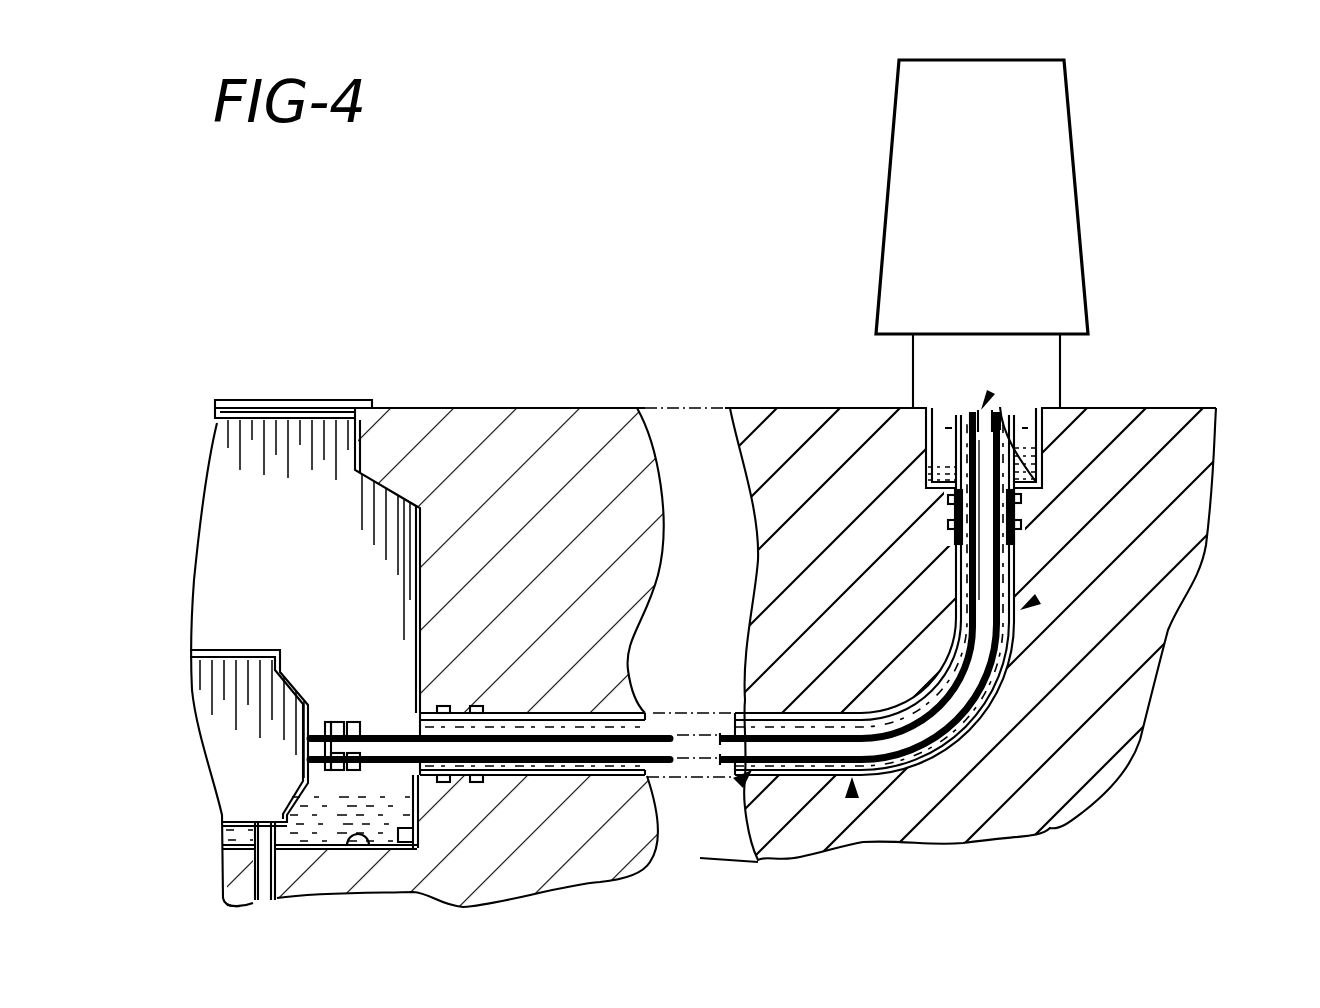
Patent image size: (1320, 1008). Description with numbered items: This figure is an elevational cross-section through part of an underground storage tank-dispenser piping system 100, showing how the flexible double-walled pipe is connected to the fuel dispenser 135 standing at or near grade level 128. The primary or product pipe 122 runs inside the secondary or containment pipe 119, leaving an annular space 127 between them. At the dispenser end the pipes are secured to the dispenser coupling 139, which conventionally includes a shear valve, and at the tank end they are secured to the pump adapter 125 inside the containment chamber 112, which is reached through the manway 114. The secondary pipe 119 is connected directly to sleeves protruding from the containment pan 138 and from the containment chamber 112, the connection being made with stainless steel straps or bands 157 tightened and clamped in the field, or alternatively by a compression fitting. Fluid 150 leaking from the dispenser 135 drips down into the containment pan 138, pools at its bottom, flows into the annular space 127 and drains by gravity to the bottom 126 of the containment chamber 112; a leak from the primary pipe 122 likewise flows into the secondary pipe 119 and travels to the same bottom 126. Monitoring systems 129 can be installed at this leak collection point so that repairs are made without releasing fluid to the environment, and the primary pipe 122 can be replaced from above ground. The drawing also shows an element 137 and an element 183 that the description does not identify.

The underground storage tank-dispenser piping system 100 is at (854, 800).
The containment chamber 112 is at (416, 503).
The manway 114 is at (297, 401).
The secondary or containment pipe 119 is at (1041, 603).
The primary or product pipe 122 is at (990, 745).
The pump adapter 125 is at (326, 720).
The bottom of the containment chamber 126 is at (352, 848).
The annular space 127 is at (738, 782).
The grade level 128 is at (597, 405).
The monitoring systems 129 is at (417, 847).
The dispenser 135 is at (1060, 188).
The tank sump wall 137 is at (213, 652).
The containment pan 138 is at (923, 433).
The dispenser coupling 139 is at (993, 388).
The fluid 150 is at (1001, 407).
The stainless steel straps or bands 157 is at (1026, 525).
The drain pipe 183 is at (224, 853).